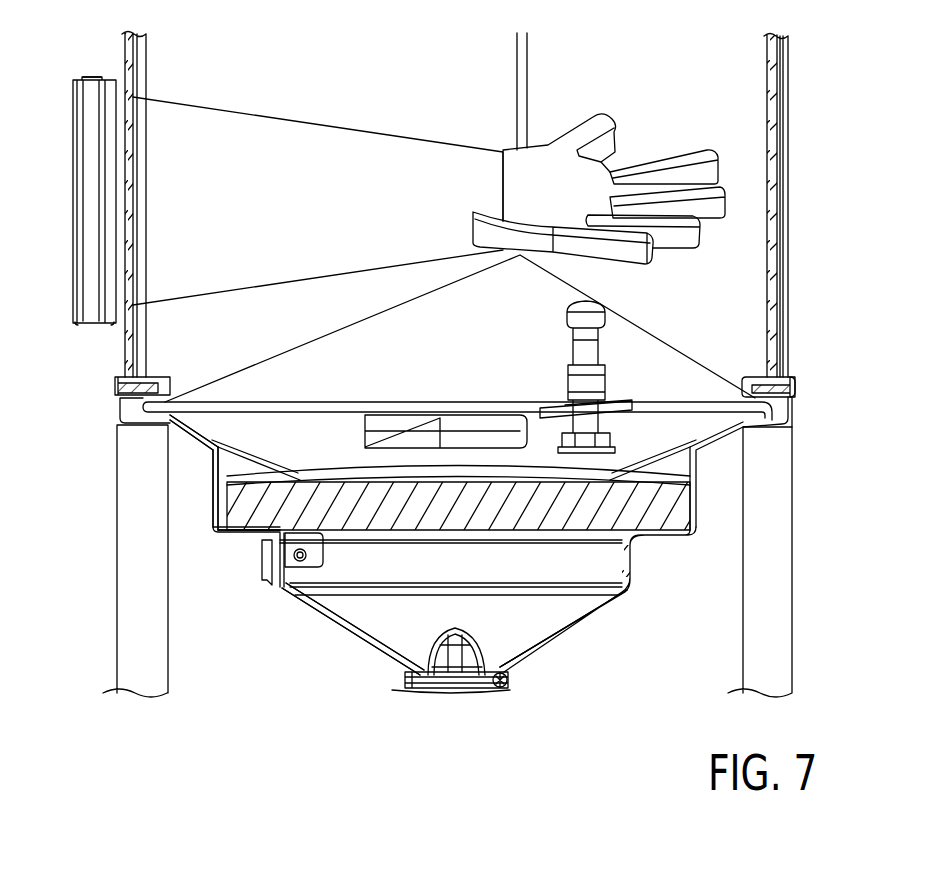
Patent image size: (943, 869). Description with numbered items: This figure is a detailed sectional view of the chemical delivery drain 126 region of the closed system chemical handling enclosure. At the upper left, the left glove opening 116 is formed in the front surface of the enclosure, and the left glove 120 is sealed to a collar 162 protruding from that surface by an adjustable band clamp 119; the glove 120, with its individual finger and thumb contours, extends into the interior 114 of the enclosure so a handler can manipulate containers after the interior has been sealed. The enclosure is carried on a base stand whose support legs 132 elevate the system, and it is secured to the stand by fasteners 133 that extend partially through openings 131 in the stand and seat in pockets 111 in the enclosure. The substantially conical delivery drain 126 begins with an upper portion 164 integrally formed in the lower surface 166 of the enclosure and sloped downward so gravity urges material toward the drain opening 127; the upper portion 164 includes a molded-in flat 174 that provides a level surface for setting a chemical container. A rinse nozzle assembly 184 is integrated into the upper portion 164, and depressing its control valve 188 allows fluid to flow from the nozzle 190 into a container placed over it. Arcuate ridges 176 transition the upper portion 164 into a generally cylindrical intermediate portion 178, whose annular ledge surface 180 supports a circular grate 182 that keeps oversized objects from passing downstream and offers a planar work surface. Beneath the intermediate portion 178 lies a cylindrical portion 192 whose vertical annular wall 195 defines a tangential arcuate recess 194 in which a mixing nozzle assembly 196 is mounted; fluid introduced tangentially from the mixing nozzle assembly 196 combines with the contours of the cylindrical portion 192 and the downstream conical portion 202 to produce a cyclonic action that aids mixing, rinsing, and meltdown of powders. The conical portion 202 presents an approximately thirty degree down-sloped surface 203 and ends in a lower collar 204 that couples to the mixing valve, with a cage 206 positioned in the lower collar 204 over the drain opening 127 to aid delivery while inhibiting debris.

The pocket 111 is at (748, 376).
The interior 114 is at (362, 100).
The left glove opening 116 is at (74, 90).
The adjustable band clamp 119 is at (95, 76).
The left glove 120 is at (258, 203).
The chemical delivery drain 126 is at (303, 636).
The drain opening 127 is at (490, 688).
The opening 131 is at (788, 376).
The support leg 132 is at (791, 563).
The fastener 133 is at (798, 387).
The collar 162 is at (121, 100).
The upper portion 164 is at (297, 423).
The lower surface 166 is at (200, 437).
The flat 174 is at (470, 432).
The arcuate ridges 176 is at (347, 468).
The intermediate portion 178 is at (218, 487).
The annular ledge surface 180 is at (243, 542).
The circular grate 182 is at (262, 497).
The rinse nozzle assembly 184 is at (630, 356).
The control valve 188 is at (620, 395).
The nozzle 190 is at (604, 308).
The cylindrical portion 192 is at (633, 572).
The arcuate recess 194 is at (325, 555).
The vertical annular wall 195 is at (330, 577).
The mixing nozzle assembly 196 is at (286, 560).
The conical portion 202 is at (567, 635).
The down-sloped surface 203 is at (414, 624).
The lower collar 204 is at (415, 673).
The cage 206 is at (482, 634).